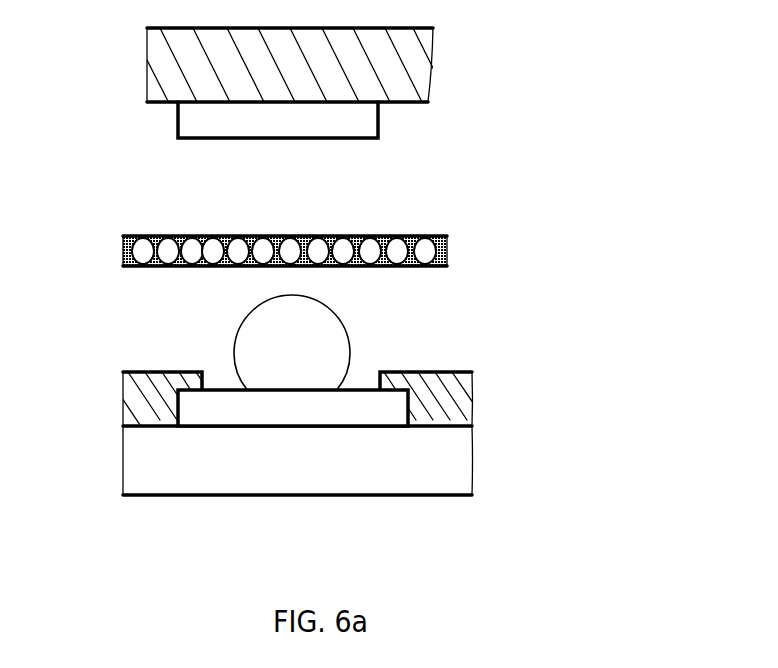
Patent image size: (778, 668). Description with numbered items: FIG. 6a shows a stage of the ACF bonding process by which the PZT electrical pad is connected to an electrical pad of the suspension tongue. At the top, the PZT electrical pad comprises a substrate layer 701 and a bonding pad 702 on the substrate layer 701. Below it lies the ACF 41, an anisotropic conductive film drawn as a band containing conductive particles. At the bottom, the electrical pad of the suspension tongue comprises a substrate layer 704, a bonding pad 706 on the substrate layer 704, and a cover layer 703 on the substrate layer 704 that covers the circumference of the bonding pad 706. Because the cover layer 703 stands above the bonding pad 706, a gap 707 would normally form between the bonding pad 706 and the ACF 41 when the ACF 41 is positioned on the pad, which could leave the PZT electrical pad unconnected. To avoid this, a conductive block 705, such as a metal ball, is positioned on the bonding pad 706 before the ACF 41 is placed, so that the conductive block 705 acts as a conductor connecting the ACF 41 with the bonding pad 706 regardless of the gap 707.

The substrate layer 701 is at (178, 58).
The bonding pad 702 is at (217, 120).
The ACF 41 is at (366, 250).
The cover layer 703 is at (155, 387).
The substrate layer 704 is at (422, 467).
The conductive block 705 is at (325, 342).
The bonding pad 706 is at (282, 413).
The gap 707 is at (365, 375).